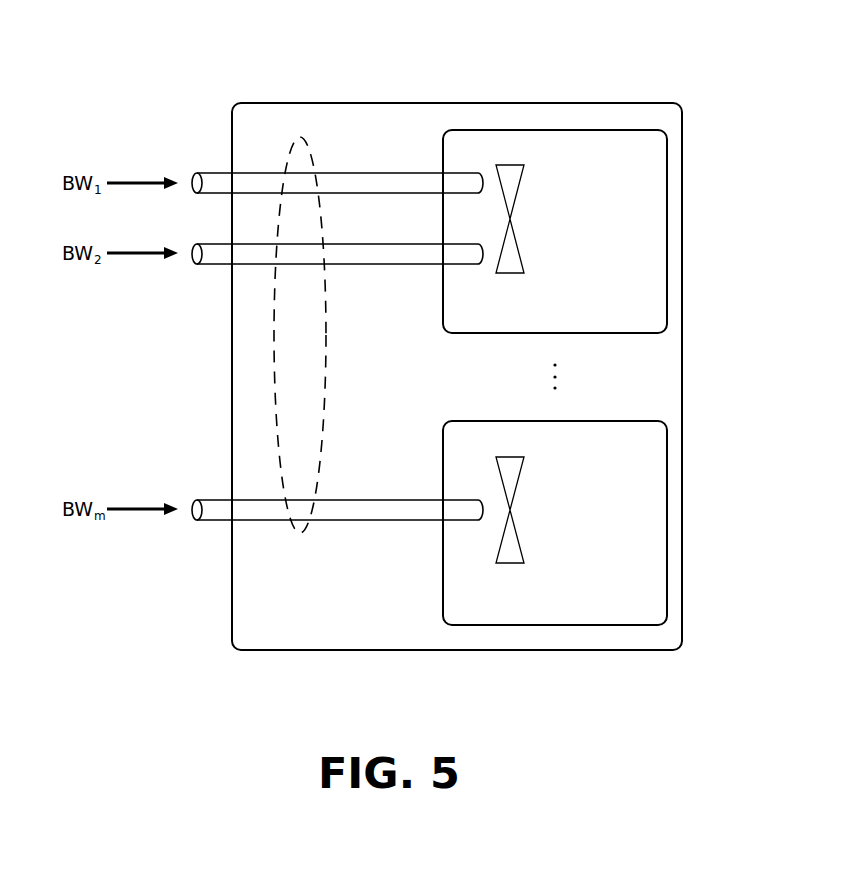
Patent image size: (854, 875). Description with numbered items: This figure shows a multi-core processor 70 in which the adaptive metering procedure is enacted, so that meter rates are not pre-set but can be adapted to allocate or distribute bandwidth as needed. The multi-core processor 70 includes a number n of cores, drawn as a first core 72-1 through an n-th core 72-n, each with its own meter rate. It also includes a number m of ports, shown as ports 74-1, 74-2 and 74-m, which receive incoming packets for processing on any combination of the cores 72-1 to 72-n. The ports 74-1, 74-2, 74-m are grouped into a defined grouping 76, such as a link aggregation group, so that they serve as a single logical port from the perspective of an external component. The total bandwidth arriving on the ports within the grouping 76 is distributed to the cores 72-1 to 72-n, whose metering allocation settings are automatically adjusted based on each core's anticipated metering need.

The multi-core processor 70 is at (408, 102).
The core 72-1 is at (665, 227).
The core 72-n is at (665, 527).
The port 74-1 is at (217, 170).
The port 74-2 is at (217, 266).
The port 74-m is at (214, 499).
The grouping 76 is at (325, 322).